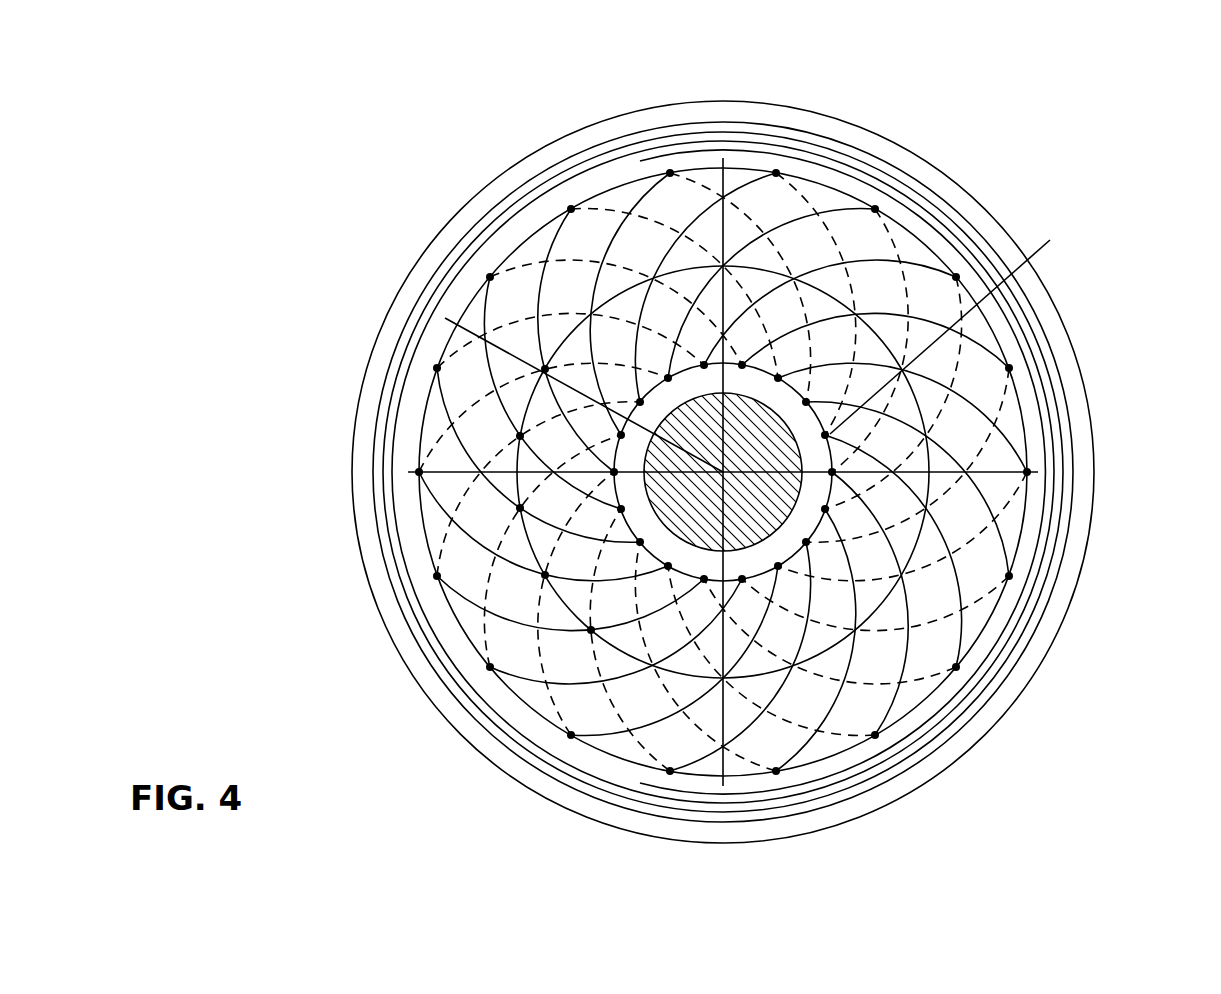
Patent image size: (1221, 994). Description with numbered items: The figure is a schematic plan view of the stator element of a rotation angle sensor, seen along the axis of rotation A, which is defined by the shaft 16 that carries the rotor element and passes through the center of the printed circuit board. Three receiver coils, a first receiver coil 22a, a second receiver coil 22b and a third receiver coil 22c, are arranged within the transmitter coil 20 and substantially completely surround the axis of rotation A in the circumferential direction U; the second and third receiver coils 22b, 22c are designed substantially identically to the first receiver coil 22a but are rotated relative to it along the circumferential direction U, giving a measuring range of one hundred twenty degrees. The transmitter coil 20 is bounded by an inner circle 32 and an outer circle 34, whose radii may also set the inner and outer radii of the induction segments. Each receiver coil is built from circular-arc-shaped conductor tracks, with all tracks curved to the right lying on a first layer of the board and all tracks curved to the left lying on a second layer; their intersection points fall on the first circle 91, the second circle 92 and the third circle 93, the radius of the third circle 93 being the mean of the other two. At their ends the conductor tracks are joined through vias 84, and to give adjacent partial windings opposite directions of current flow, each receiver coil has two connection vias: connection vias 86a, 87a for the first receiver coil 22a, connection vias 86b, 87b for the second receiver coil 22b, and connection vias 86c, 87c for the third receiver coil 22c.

The shaft 16 is at (712, 438).
The transmitter coil 20 is at (1090, 543).
The first receiver coil 22a is at (430, 412).
The second receiver coil 22b is at (450, 317).
The third receiver coil 22c is at (555, 237).
The inner circle 32 is at (1036, 412).
The outer circle 34 is at (1075, 343).
The vias 84 is at (980, 786).
The connection via of the first receiver coil 86a is at (497, 535).
The connection via of the second receiver coil 86b is at (583, 735).
The connection via of the third receiver coil 86c is at (478, 330).
The connection via of the first receiver coil 87a is at (505, 503).
The connection via of the second receiver coil 87b is at (493, 696).
The connection via of the third receiver coil 87c is at (482, 322).
The first circle 91 is at (949, 324).
The second circle 92 is at (822, 180).
The third circle 93 is at (636, 256).
The axis of rotation A is at (723, 472).
The circumferential direction U is at (205, 306).